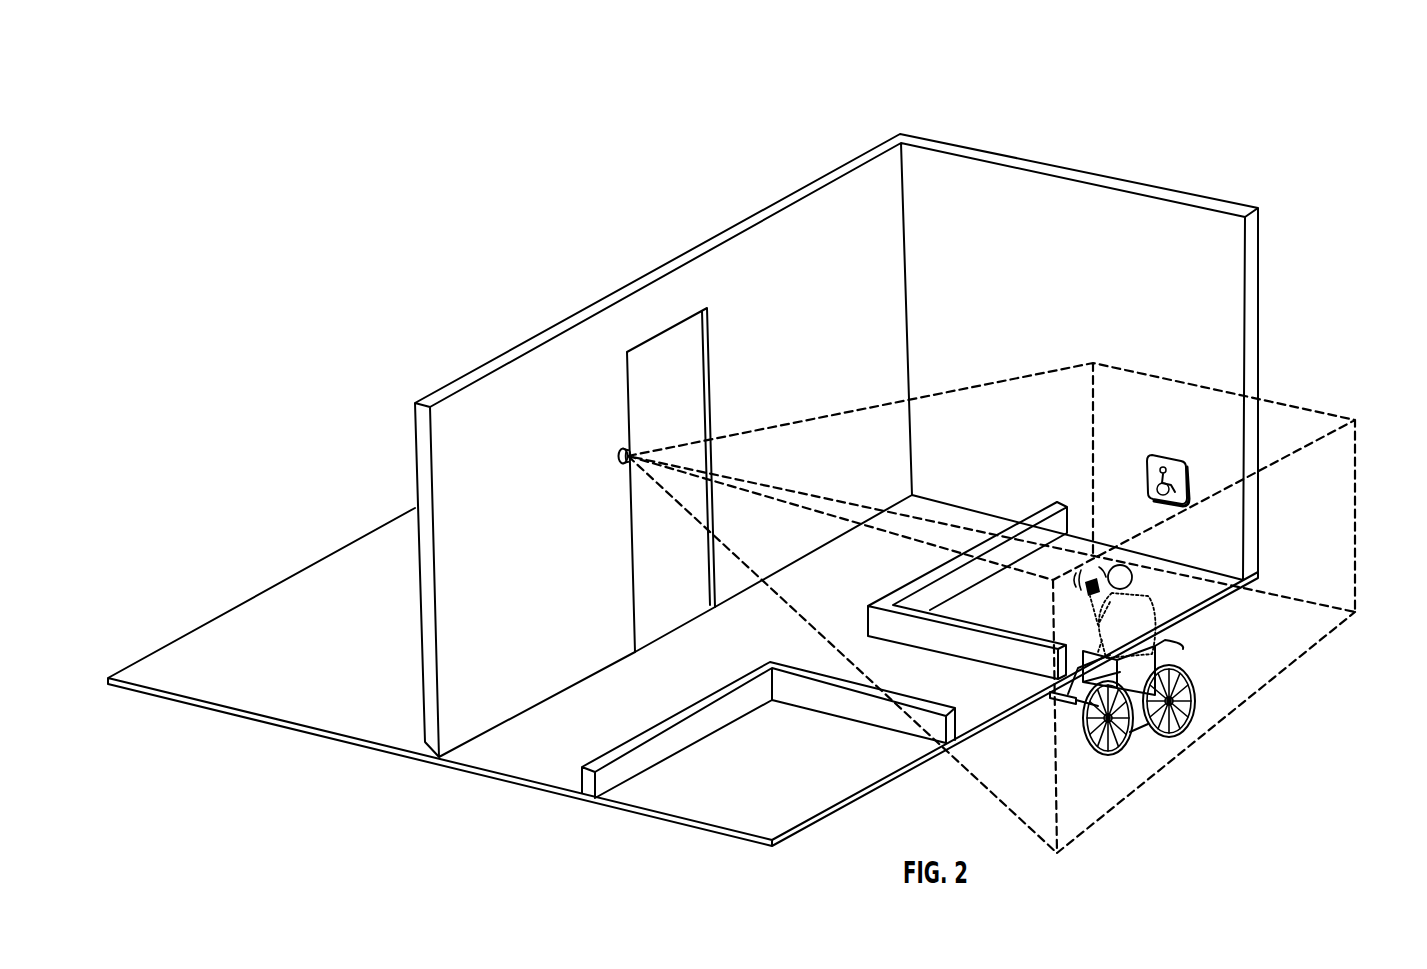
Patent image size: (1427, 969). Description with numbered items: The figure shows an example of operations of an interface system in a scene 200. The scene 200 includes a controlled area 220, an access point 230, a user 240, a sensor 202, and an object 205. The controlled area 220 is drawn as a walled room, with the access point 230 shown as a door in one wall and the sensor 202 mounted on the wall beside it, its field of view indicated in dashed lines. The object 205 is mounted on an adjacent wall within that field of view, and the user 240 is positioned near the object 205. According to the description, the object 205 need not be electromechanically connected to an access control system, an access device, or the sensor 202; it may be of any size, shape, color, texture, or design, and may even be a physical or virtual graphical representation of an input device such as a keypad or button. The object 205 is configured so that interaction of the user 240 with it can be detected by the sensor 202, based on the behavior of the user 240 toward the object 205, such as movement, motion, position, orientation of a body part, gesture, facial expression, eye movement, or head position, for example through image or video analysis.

The scene 200 is at (964, 76).
The controlled area 220 is at (569, 212).
The access point 230 is at (682, 357).
The sensor 202 is at (624, 449).
The object 205 is at (1174, 462).
The user 240 is at (1147, 600).